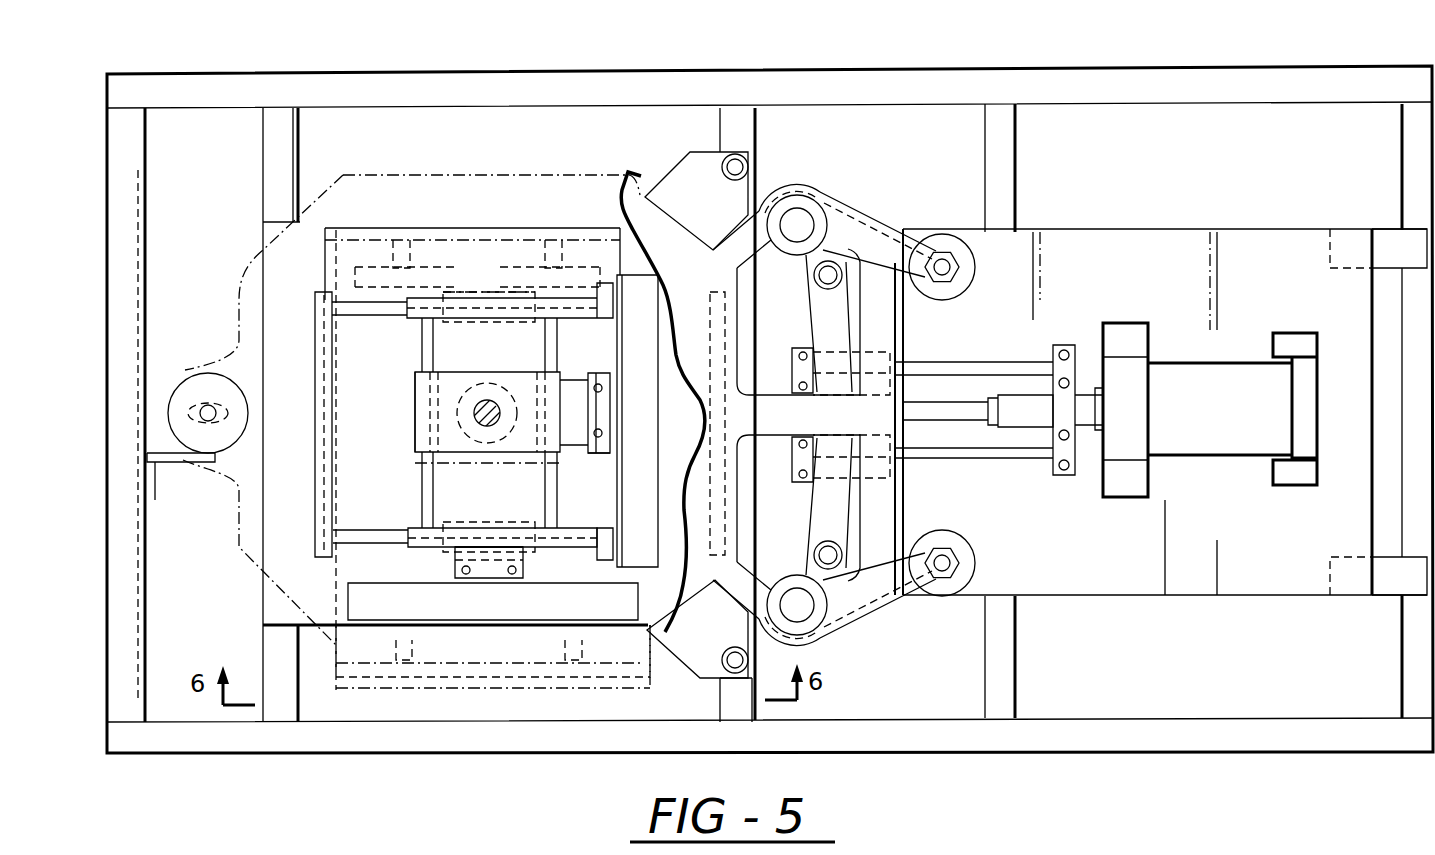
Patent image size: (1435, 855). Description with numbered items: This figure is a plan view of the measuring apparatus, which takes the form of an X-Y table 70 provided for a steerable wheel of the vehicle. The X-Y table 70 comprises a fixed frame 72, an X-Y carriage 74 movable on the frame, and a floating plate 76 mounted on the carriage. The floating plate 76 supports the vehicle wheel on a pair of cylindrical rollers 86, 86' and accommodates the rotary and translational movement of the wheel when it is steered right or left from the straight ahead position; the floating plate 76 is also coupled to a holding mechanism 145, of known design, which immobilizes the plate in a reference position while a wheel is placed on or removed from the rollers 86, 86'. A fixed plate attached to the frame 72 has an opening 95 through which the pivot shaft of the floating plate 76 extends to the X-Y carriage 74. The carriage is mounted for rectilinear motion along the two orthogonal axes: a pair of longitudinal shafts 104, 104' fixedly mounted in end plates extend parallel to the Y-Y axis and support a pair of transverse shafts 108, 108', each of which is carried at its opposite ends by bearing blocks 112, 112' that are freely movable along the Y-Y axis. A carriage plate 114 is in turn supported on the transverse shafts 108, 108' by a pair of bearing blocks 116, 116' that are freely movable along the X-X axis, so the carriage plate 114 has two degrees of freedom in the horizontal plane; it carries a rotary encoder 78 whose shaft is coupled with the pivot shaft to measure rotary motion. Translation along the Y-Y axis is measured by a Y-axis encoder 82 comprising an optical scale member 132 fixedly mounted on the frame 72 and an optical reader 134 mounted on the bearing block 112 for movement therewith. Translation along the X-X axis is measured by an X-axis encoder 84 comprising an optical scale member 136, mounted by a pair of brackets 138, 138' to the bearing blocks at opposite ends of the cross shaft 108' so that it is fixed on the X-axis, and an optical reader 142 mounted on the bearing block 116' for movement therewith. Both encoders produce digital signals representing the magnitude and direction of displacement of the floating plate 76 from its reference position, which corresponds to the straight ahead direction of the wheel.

The X-Y table 70 is at (778, 61).
The fixed frame 72 is at (1156, 69).
The holding mechanism 145 is at (912, 204).
The floating plate 76 is at (653, 245).
The bracket 138' is at (628, 402).
The bracket 138 is at (553, 671).
The cylindrical roller 86 is at (416, 406).
The cylindrical roller 86' is at (499, 209).
The opening 95 is at (412, 430).
The longitudinal shaft 104' is at (439, 282).
The longitudinal shaft 104 is at (456, 424).
The bearing block 112' is at (489, 283).
The transverse shaft 108' is at (494, 518).
The carriage plate 114 is at (452, 368).
The bearing block 116 is at (449, 411).
The X-Y carriage 74 is at (506, 459).
The rotary encoder 78 is at (485, 388).
The X-axis encoder 84 is at (612, 388).
The bearing block 116' is at (656, 421).
The optical scale member 136 is at (645, 344).
The transverse shaft 108 is at (379, 427).
The optical reader 142 is at (598, 458).
The optical reader 134 is at (450, 565).
The bearing block 112 is at (454, 582).
The optical scale member 132 is at (504, 613).
The Y-axis encoder 82 is at (533, 576).